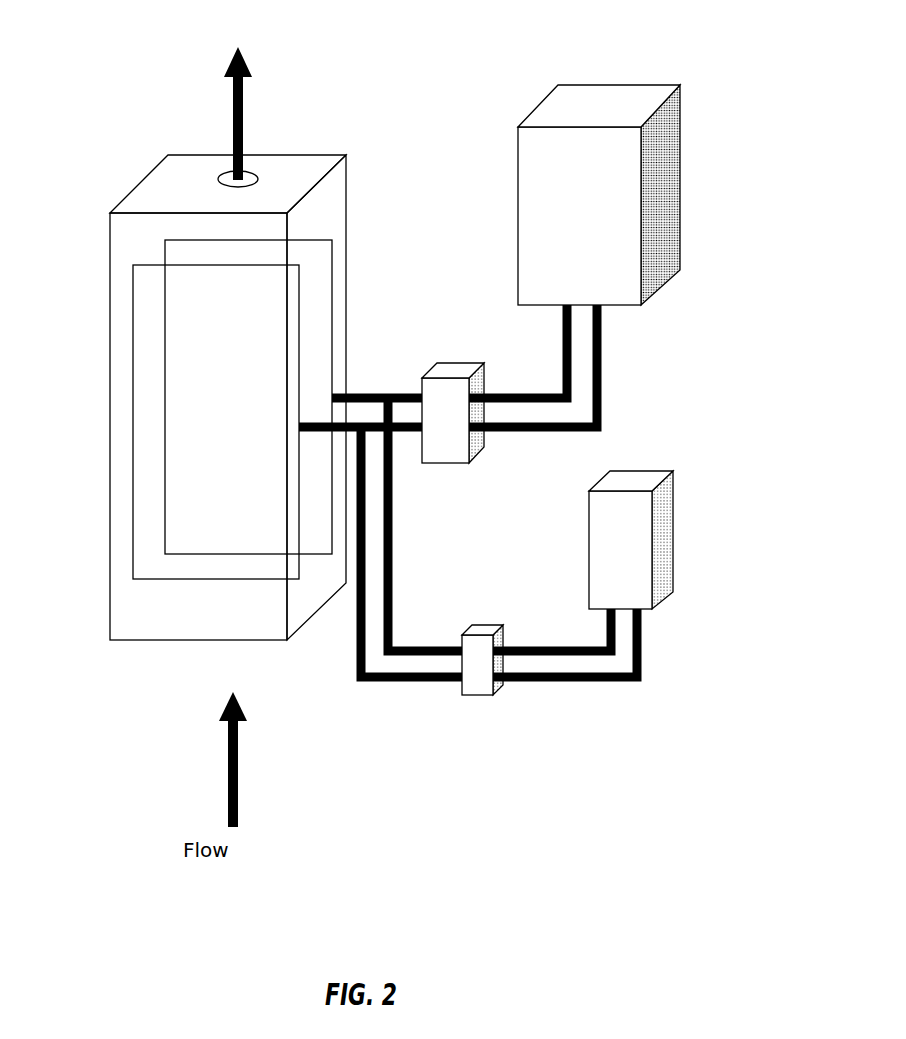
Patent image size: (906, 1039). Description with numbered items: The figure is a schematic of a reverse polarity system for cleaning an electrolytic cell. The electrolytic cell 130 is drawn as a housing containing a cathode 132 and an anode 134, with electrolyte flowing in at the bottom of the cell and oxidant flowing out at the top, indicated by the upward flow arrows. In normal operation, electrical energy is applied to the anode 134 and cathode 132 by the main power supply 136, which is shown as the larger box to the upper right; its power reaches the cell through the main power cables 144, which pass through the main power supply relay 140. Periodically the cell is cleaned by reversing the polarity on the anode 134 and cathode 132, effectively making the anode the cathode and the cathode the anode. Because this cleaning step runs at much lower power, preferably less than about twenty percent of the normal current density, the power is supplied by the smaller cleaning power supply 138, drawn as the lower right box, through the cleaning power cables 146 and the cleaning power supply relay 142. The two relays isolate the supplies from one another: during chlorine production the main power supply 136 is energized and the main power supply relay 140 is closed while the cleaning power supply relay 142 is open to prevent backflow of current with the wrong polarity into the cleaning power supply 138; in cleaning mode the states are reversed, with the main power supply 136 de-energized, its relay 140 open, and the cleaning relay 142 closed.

The electrolytic cell 130 is at (282, 155).
The cathode 132 is at (173, 248).
The anode 134 is at (224, 545).
The main power supply 136 is at (612, 107).
The cleaning power supply 138 is at (628, 480).
The main power supply relay 140 is at (455, 363).
The cleaning power supply relay 142 is at (477, 663).
The main power cables 144 is at (603, 390).
The cleaning power cables 146 is at (607, 680).